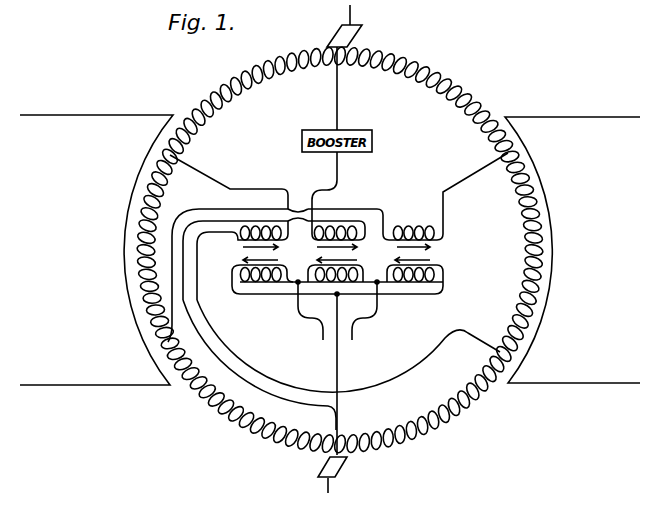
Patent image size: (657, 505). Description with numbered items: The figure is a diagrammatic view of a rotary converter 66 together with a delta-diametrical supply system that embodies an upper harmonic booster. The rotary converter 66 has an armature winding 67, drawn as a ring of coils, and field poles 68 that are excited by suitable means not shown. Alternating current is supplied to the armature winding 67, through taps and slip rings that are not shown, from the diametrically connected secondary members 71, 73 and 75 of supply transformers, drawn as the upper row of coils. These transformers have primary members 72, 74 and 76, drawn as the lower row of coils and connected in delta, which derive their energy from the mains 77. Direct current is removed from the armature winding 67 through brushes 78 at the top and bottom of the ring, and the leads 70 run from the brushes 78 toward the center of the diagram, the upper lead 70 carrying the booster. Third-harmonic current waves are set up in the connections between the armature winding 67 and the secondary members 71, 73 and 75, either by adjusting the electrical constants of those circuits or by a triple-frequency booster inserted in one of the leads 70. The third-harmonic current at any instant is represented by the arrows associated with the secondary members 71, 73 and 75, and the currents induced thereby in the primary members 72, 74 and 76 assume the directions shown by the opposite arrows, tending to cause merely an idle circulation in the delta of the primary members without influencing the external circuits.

The rotary converter 66 is at (339, 250).
The armature winding 67 is at (207, 108).
The field poles 68 is at (330, 250).
The connecting leads 70 is at (340, 70).
The secondary member 71 is at (411, 229).
The primary member 72 is at (410, 276).
The secondary member 73 is at (333, 228).
The primary member 74 is at (325, 276).
The secondary member 75 is at (255, 228).
The primary member 76 is at (265, 276).
The mains 77 is at (337, 329).
The brushes 78 is at (353, 33).